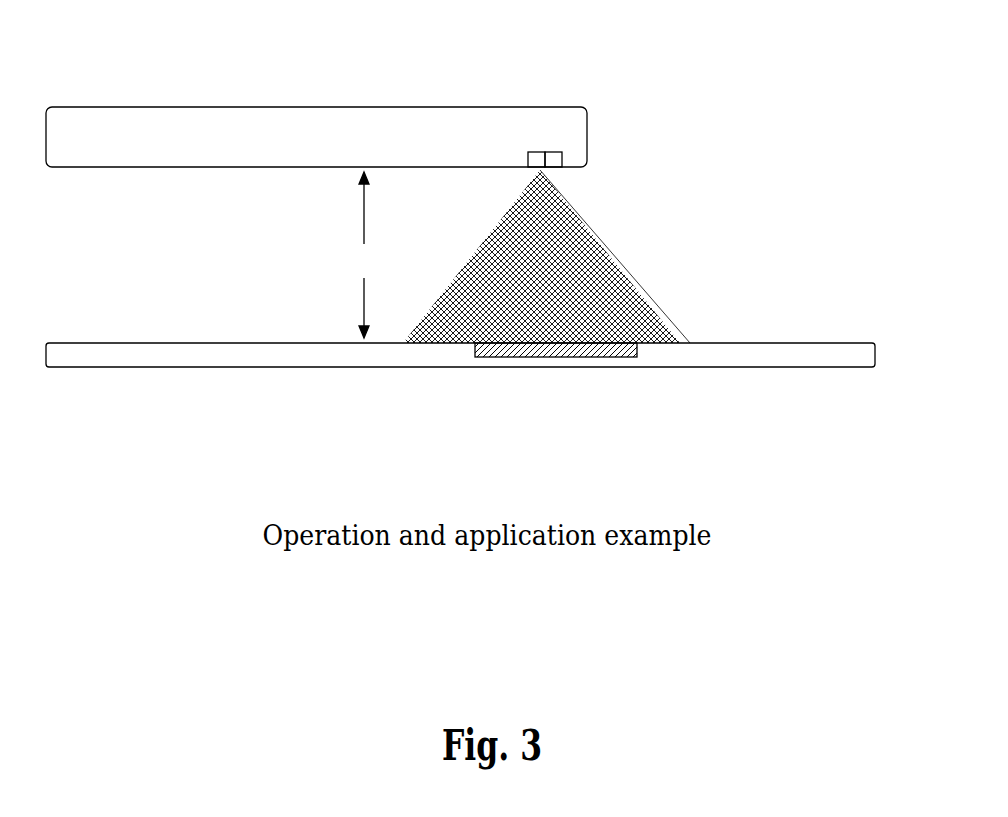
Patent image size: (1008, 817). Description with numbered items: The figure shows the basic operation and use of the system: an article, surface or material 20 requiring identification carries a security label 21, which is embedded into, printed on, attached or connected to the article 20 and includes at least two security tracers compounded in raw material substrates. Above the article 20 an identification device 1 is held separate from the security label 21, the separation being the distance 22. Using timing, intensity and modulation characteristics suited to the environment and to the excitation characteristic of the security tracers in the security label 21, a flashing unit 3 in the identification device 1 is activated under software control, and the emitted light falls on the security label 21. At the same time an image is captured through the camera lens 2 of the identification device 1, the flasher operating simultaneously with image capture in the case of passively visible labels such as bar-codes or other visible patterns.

The identification device 1 is at (265, 107).
The camera lens 2 is at (537, 148).
The flashing unit 3 is at (558, 148).
The article 20 is at (270, 343).
The security label 21 is at (610, 347).
The distance 22 is at (364, 255).